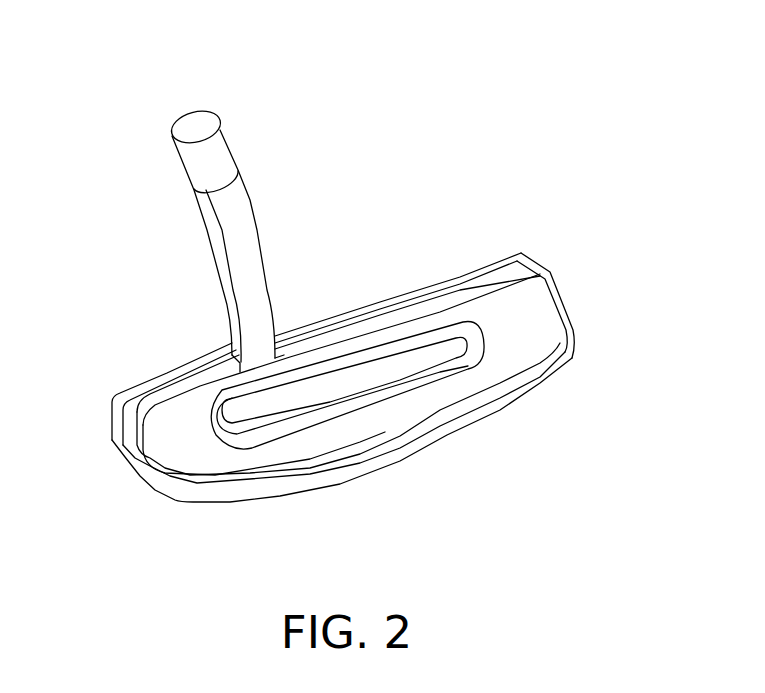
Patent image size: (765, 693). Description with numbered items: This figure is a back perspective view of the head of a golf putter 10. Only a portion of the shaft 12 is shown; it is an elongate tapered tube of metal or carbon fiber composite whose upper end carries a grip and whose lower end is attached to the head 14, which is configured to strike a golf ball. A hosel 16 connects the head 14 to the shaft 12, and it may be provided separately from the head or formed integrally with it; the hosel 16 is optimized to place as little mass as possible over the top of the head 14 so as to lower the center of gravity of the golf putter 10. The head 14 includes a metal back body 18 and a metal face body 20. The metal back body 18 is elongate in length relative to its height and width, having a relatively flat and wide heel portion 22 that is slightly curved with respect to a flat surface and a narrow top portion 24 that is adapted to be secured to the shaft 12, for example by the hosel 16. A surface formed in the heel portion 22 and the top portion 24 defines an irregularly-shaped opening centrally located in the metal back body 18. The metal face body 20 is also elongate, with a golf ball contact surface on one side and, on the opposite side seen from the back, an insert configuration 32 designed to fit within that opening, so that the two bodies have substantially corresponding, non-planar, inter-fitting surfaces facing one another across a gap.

The golf putter 10 is at (482, 155).
The shaft 12 is at (192, 150).
The head 14 is at (173, 503).
The hosel 16 is at (262, 332).
The metal back body 18 is at (573, 371).
The metal face body 20 is at (518, 253).
The heel portion 22 is at (285, 470).
The top portion 24 is at (387, 323).
The insert configuration 32 is at (385, 395).